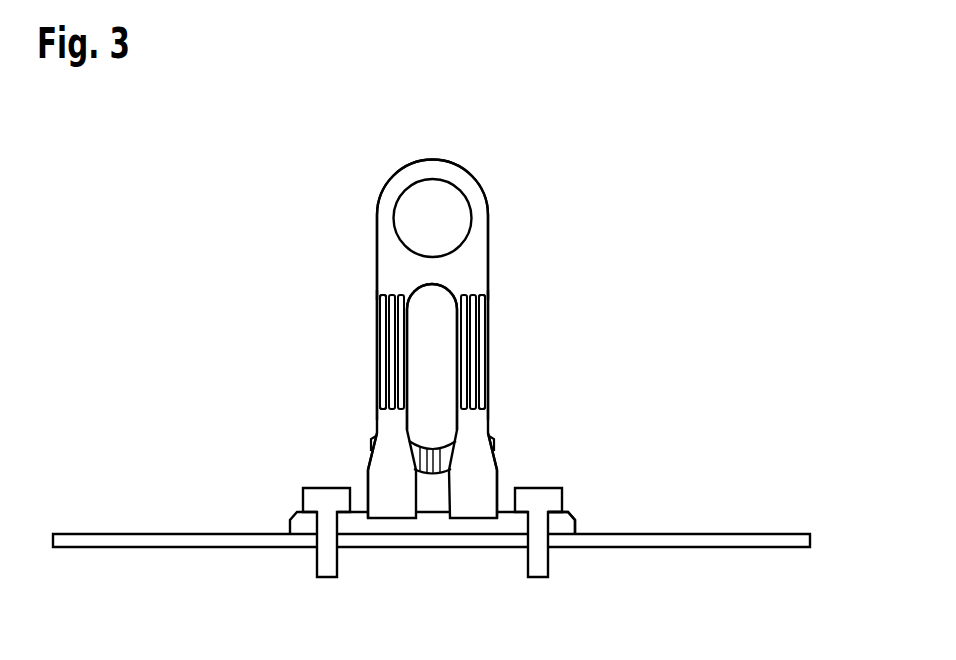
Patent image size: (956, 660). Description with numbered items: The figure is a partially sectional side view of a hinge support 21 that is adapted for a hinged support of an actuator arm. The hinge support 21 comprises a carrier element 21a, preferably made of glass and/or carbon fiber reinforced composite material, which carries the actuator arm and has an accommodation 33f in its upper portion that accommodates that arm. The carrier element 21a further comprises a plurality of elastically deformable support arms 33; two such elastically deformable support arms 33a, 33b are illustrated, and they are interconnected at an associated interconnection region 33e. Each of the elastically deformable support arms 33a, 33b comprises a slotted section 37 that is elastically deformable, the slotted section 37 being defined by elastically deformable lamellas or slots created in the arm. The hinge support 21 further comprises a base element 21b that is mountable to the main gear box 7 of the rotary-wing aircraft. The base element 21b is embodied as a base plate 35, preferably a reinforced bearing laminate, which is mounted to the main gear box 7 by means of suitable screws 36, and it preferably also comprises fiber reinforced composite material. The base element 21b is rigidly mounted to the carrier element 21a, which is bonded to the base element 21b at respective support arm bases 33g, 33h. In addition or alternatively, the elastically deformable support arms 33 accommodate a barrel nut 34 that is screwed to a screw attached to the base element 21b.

The hinge support 21 is at (553, 191).
The carrier element 21a is at (374, 242).
The base element 21b is at (577, 528).
The elastically deformable support arms 33 is at (373, 301).
The elastically deformable support arm 33a is at (374, 350).
The elastically deformable support arm 33b is at (490, 342).
The interconnection region 33e is at (434, 292).
The accommodation 33f is at (400, 204).
The support arm base 33g is at (501, 487).
The support arm base 33h is at (364, 487).
The barrel nut 34 is at (433, 443).
The base plate 35 is at (358, 523).
The screws 36 is at (310, 504).
The slotted section 37 is at (376, 363).
The main gear box 7 is at (721, 532).